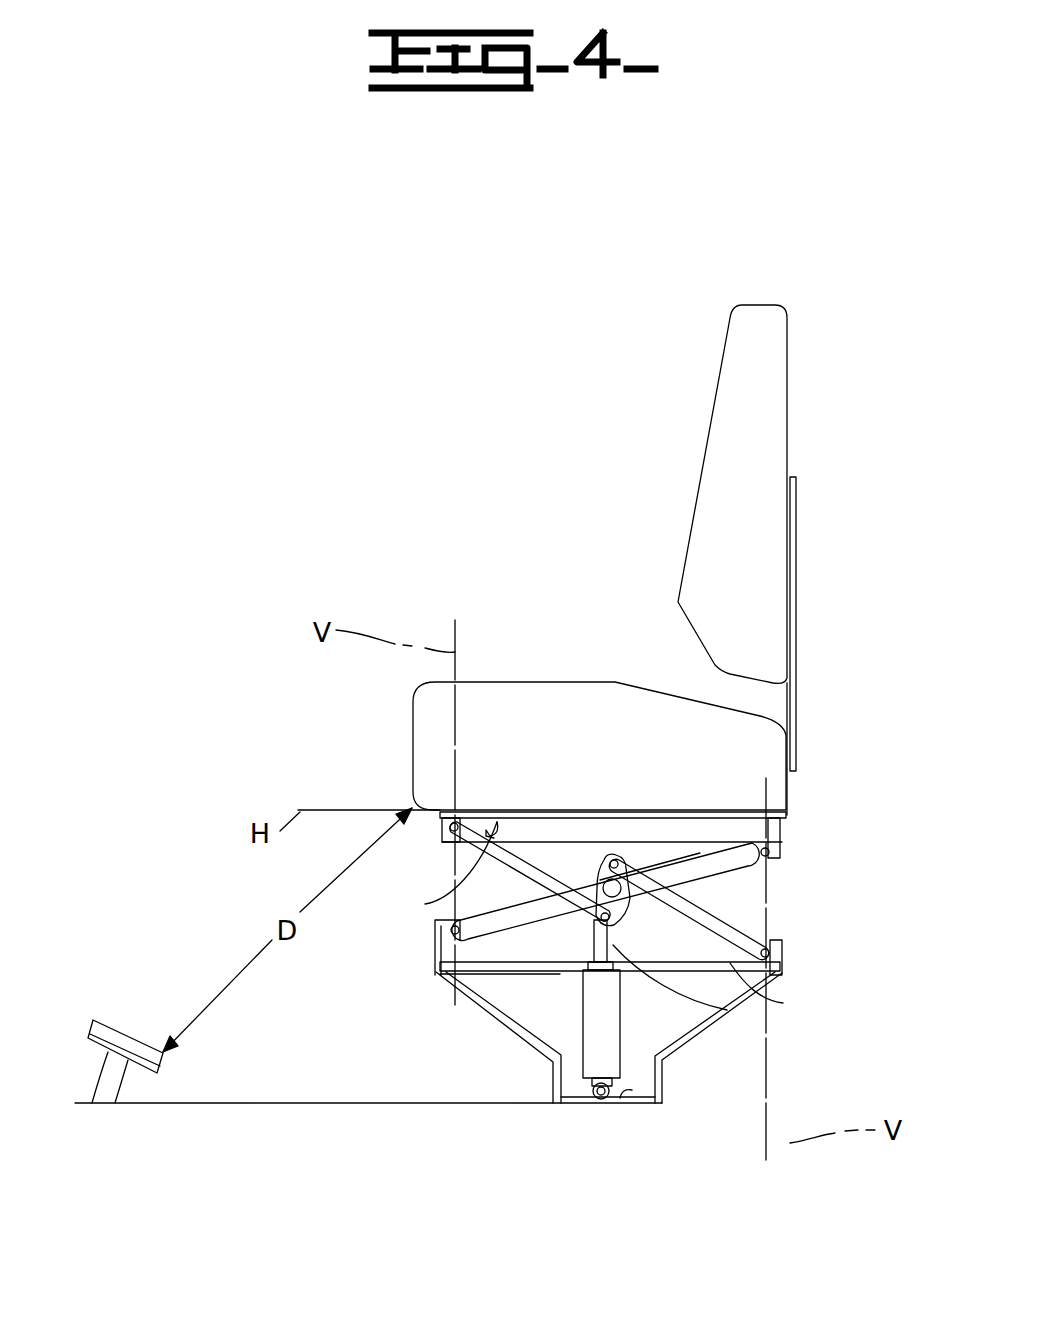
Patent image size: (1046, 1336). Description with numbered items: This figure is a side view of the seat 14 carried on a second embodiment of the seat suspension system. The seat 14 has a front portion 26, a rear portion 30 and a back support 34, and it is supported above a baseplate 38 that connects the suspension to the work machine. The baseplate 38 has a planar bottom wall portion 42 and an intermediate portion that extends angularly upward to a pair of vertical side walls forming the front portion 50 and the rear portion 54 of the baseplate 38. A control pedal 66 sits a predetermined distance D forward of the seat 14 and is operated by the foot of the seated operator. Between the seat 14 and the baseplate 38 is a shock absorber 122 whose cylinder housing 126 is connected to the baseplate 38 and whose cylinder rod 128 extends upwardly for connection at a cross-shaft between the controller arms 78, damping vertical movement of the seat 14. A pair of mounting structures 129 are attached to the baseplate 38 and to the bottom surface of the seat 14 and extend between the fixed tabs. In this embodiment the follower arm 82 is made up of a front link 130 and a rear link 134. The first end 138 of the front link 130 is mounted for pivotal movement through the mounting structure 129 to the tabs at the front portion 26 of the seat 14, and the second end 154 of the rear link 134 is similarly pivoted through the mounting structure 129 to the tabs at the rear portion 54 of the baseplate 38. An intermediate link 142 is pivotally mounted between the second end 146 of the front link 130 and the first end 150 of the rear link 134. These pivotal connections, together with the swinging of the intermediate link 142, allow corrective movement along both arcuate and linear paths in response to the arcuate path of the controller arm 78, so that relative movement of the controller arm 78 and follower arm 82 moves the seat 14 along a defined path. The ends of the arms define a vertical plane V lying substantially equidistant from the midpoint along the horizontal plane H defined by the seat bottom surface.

The seat 14 is at (637, 748).
The front portion 26 is at (433, 800).
The rear portion 30 is at (773, 798).
The back support 34 is at (770, 355).
The baseplate 38 is at (645, 1030).
The planar bottom wall portion 42 is at (625, 1090).
The front portion of the baseplate 50 is at (437, 948).
The rear portion of the baseplate 54 is at (785, 953).
The control pedal 66 is at (125, 1045).
The controller arm 78 is at (738, 870).
The follower arm 82 is at (730, 910).
The shock absorber 122 is at (583, 1060).
The cylinder housing 126 is at (607, 1032).
The cylinder rod 128 is at (727, 1010).
The mounting structure 129 is at (497, 822).
The front link 130 is at (425, 904).
The rear link 134 is at (750, 935).
The first end of the front link 138 is at (456, 842).
The intermediate link 142 is at (610, 864).
The second end of the front link 146 is at (587, 967).
The first end of the rear link 150 is at (622, 860).
The second end of the rear link 154 is at (768, 940).